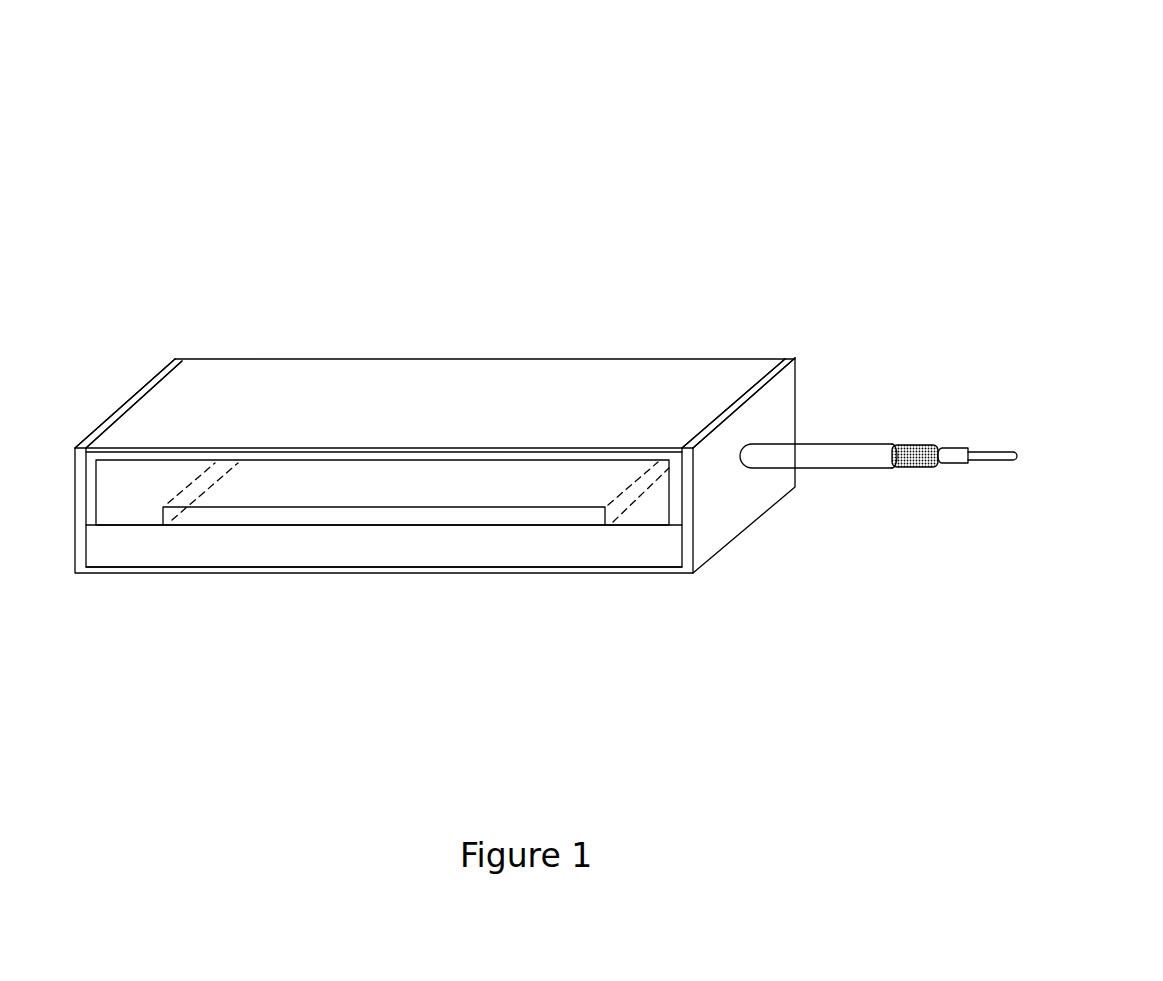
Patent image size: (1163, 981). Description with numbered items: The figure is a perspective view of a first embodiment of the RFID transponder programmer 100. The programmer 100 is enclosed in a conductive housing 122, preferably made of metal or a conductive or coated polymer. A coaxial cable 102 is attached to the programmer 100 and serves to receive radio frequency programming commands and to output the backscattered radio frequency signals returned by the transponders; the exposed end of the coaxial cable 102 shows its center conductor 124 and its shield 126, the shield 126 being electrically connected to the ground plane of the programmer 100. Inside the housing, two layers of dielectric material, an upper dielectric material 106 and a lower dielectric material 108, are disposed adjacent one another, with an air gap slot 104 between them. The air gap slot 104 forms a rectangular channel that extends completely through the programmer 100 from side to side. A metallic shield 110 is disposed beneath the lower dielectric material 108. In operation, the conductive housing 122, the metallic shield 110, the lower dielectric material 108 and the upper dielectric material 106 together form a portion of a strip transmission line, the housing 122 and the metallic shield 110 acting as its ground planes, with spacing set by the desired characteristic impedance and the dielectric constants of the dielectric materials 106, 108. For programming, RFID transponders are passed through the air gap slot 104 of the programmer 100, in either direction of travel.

The RFID transponder programmer 100 is at (734, 162).
The coaxial cable 102 is at (837, 457).
The air gap slot 104 is at (415, 512).
The upper dielectric material 106 is at (128, 492).
The lower dielectric material 108 is at (203, 547).
The metallic shield 110 is at (637, 575).
The conductive housing 122 is at (333, 393).
The center conductor 124 is at (1005, 462).
The shield 126 is at (915, 467).